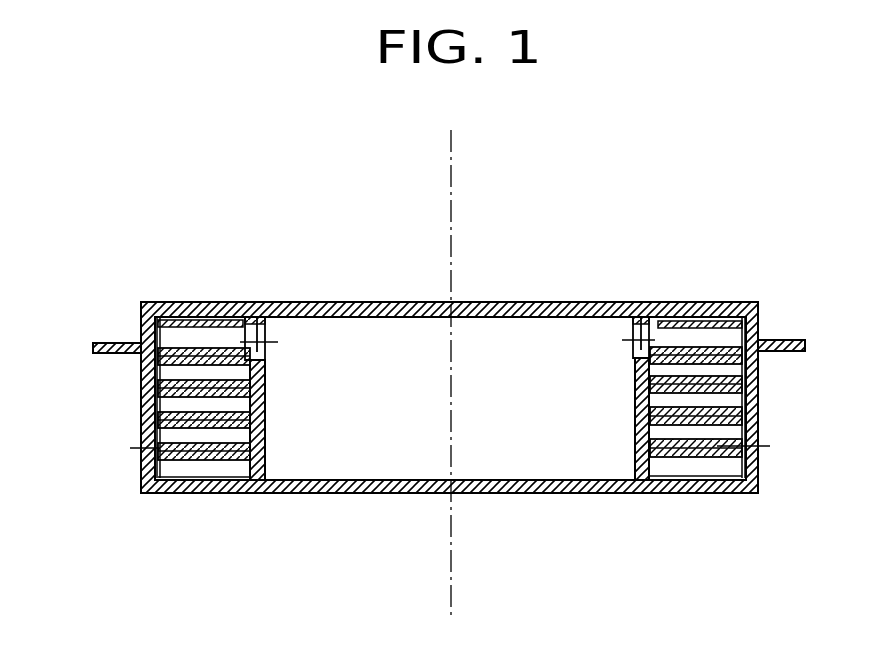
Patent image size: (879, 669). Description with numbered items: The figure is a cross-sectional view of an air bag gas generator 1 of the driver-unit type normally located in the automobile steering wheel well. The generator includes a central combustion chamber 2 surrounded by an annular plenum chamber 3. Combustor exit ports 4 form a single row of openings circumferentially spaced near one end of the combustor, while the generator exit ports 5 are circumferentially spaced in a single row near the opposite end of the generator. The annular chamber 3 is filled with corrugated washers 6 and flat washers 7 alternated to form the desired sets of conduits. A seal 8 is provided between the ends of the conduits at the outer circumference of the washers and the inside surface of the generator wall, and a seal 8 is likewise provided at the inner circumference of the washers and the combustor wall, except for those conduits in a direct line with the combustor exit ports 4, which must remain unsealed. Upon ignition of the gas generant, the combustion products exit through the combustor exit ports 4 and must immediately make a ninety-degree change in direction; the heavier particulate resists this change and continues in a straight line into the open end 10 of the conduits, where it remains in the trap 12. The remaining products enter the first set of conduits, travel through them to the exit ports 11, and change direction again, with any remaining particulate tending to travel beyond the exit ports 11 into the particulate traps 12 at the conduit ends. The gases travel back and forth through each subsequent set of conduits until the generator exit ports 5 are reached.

The gas generator 1 is at (512, 302).
The combustion chamber 2 is at (588, 342).
The annular plenum chamber 3 is at (670, 333).
The combustor exit ports 4 is at (265, 327).
The generator exit ports 5 is at (145, 443).
The corrugated washers 6 is at (730, 402).
The flat washers 7 is at (738, 382).
The seal 8 is at (250, 456).
The open end of the conduits 10 is at (249, 337).
The exit ports 11 is at (158, 380).
The particulate trap 12 is at (208, 340).